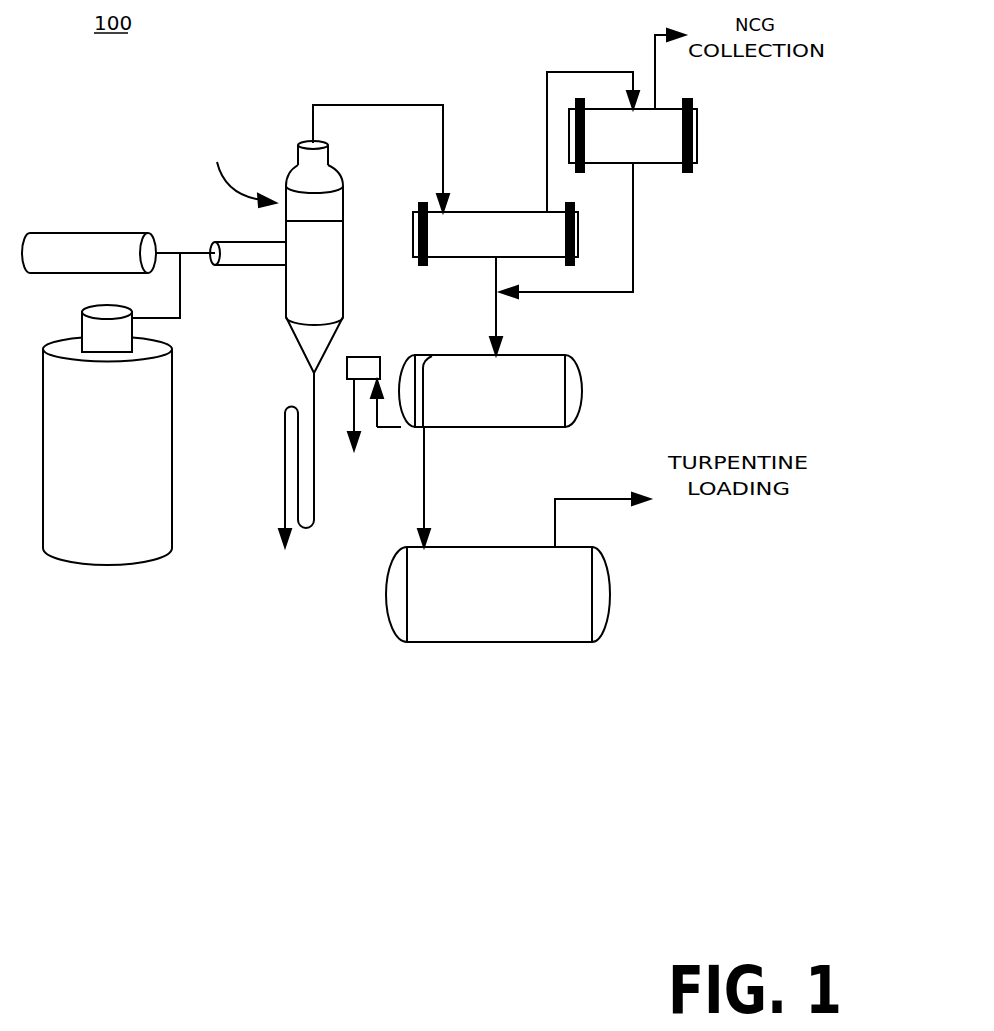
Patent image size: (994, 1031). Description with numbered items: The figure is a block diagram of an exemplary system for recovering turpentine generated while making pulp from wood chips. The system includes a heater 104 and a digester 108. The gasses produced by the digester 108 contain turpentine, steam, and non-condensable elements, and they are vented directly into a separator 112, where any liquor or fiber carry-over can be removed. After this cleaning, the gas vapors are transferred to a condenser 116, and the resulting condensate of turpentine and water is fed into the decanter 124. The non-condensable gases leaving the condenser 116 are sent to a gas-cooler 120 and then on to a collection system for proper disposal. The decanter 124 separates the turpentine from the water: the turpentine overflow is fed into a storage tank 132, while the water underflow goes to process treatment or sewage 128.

The heater 104 is at (48, 233).
The digester 108 is at (173, 498).
The separator 112 is at (343, 212).
The condenser 116 is at (472, 210).
The gas-cooler 120 is at (657, 165).
The decanter 124 is at (585, 390).
The process treatment or sewage 128 is at (362, 355).
The storage tank 132 is at (613, 595).